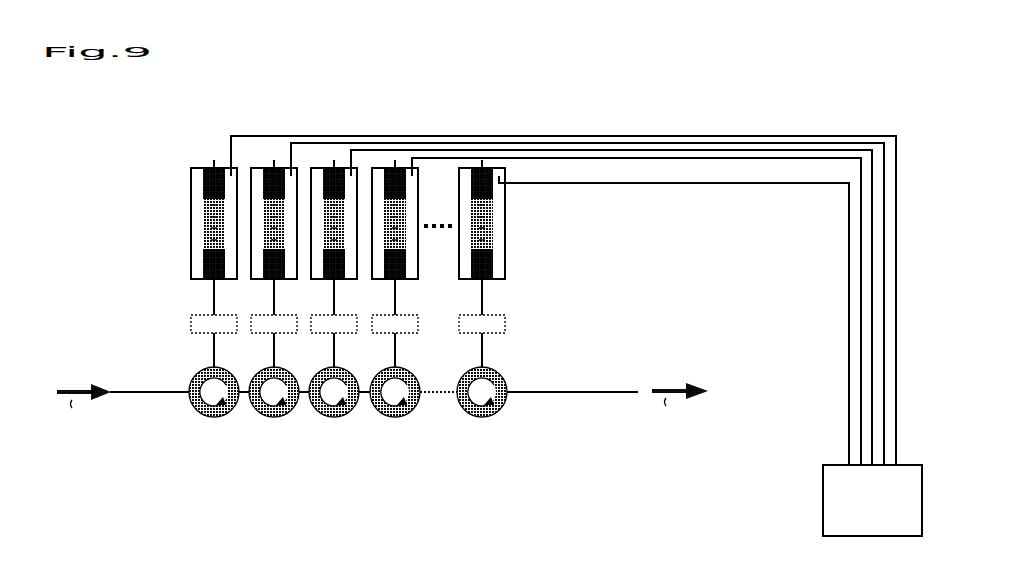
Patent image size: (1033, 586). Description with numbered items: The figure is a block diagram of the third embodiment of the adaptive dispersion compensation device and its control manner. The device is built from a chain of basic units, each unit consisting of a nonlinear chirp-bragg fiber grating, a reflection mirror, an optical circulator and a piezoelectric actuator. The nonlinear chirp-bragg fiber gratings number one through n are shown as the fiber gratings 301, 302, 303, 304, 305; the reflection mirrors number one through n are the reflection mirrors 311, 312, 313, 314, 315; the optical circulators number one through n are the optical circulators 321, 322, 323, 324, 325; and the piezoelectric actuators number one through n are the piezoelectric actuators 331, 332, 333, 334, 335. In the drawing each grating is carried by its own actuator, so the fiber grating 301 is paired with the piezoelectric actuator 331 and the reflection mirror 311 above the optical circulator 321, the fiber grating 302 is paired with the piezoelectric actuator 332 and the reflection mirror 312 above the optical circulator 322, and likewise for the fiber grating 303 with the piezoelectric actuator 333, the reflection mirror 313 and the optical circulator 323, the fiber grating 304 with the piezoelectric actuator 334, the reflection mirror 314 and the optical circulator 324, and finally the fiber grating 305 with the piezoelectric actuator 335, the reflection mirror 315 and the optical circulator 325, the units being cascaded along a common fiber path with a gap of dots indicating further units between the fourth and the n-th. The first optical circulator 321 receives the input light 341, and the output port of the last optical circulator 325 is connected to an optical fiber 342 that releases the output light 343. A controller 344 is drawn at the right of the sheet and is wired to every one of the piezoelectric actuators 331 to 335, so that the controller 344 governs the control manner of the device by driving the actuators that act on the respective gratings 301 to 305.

The nonlinear chirp-bragg fiber grating #1 301 is at (213, 207).
The nonlinear chirp-bragg fiber grating #2 302 is at (264, 168).
The nonlinear chirp-bragg fiber grating #3 303 is at (335, 167).
The nonlinear chirp-bragg fiber grating #4 304 is at (397, 168).
The nonlinear chirp-bragg fiber grating #n 305 is at (628, 182).
The reflection mirror #1 311 is at (203, 326).
The reflection mirror #2 312 is at (282, 326).
The reflection mirror #3 313 is at (338, 320).
The reflection mirror #4 314 is at (403, 320).
The reflection mirror #n 315 is at (487, 323).
The optical circulator #1 321 is at (200, 410).
The optical circulator #2 322 is at (268, 413).
The optical circulator #3 323 is at (258, 440).
The optical circulator #4 324 is at (341, 451).
The optical circulator #n 325 is at (480, 415).
The piezoelectric actuator #1 331 is at (228, 215).
The piezoelectric actuator #2 332 is at (293, 232).
The piezoelectric actuator #3 333 is at (193, 244).
The piezoelectric actuator #4 334 is at (410, 208).
The piezoelectric actuator #n 335 is at (497, 232).
The input light 341 is at (83, 406).
The optical fiber 342 is at (527, 393).
The output light 343 is at (683, 404).
The controller 344 is at (823, 508).